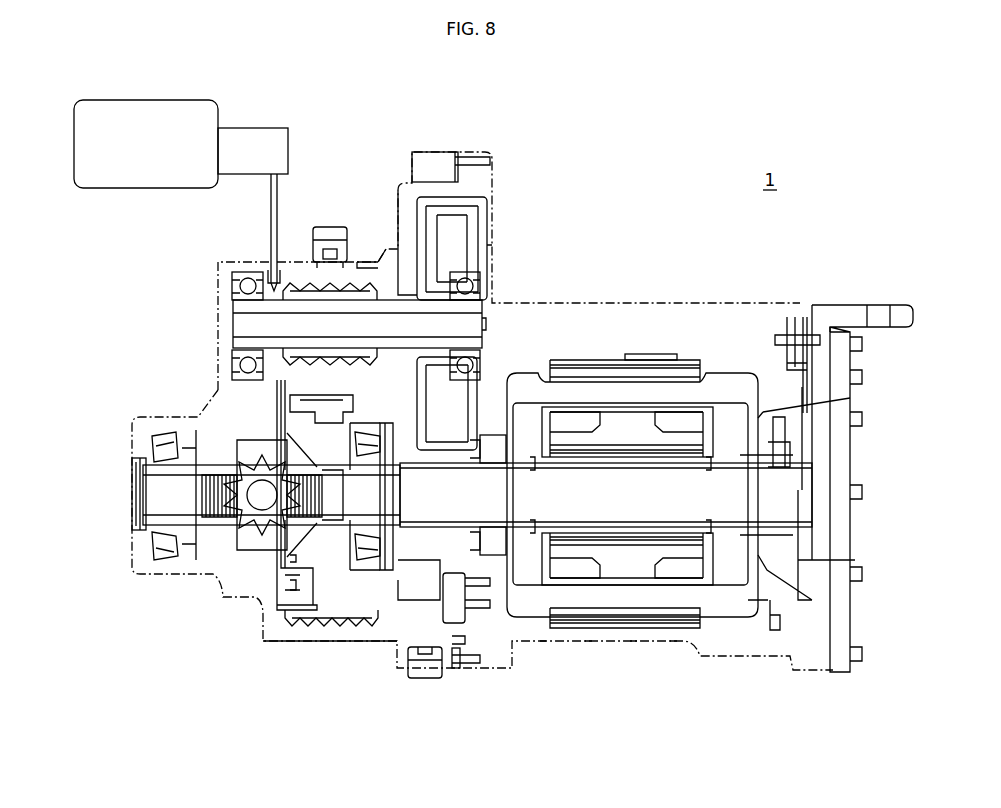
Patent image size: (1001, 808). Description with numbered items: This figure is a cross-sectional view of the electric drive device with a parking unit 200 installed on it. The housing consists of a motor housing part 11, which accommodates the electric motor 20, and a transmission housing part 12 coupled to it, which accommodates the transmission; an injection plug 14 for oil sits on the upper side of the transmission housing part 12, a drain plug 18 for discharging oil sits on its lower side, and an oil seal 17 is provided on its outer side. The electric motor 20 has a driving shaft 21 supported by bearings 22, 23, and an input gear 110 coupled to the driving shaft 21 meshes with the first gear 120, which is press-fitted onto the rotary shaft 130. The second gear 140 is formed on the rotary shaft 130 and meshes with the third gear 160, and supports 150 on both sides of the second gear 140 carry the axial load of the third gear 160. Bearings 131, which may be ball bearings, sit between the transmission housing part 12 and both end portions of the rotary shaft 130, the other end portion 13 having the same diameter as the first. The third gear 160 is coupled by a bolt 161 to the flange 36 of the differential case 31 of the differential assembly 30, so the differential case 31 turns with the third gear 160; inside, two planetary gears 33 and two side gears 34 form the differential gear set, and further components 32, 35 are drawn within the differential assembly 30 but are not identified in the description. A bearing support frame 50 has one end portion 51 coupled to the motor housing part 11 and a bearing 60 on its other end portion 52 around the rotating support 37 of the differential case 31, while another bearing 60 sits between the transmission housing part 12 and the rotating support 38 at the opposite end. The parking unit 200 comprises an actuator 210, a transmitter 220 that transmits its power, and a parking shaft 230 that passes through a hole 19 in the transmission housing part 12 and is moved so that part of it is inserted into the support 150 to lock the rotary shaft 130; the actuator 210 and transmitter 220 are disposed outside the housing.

The motor housing part 11 is at (567, 652).
The transmission housing part 12 is at (331, 652).
The other end portion 13 is at (448, 153).
The injection plug 14 is at (332, 227).
The oil seal 17 is at (135, 462).
The drain plug 18 is at (425, 678).
The hole 19 is at (271, 263).
The electric motor 20 is at (692, 572).
The driving shaft 21 is at (720, 507).
The bearing 22 is at (492, 457).
The bearing 23 is at (745, 494).
The differential assembly 30 is at (238, 501).
The differential case 31 is at (282, 545).
The side gear 32 is at (216, 534).
The planetary gear 33 is at (260, 454).
The side gear 34 is at (250, 499).
The side gear 35 is at (196, 539).
The flange 36 is at (298, 599).
The rotating support 37 is at (372, 422).
The rotating support 38 is at (168, 447).
The bearing support frame 50 is at (460, 654).
The one end portion 51 is at (462, 602).
The other end portion 52 is at (387, 562).
The bearing 60 is at (162, 547).
The input gear 110 is at (212, 390).
The first gear 120 is at (470, 212).
The rotary shaft 130 is at (232, 308).
The bearing 131 is at (238, 280).
The second gear 140 is at (300, 290).
The support 150 is at (383, 262).
The third gear 160 is at (325, 612).
The bolt 161 is at (330, 395).
The parking unit 200 is at (70, 216).
The actuator 210 is at (141, 105).
The transmitter 220 is at (263, 130).
The parking shaft 230 is at (280, 186).